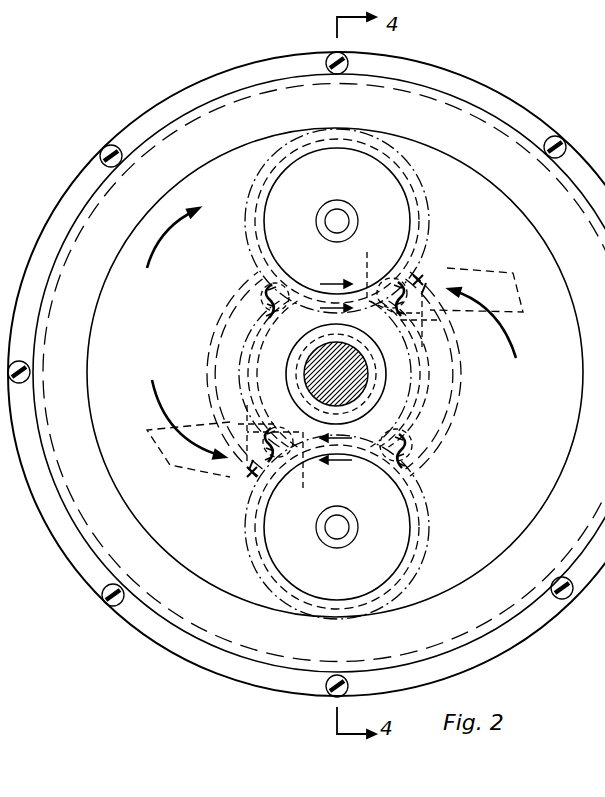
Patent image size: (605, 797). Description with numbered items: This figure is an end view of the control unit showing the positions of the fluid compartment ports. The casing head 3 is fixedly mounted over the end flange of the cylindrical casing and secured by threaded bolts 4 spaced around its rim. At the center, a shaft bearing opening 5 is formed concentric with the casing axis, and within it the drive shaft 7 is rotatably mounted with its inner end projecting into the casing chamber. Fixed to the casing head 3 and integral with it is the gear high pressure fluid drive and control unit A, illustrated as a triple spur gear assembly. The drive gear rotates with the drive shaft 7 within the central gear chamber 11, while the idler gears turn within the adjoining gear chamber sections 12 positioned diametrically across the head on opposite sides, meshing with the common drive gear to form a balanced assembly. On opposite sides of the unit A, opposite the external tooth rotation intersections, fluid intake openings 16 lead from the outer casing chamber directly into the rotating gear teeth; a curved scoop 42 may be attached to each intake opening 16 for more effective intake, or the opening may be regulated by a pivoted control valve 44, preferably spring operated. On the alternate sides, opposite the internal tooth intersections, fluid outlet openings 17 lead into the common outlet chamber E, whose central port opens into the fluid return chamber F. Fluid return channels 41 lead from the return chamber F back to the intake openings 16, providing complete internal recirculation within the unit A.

The casing head 3 is at (63, 540).
The threaded bolts 4 is at (104, 600).
The shaft bearing opening 5 is at (305, 369).
The drive shaft 7 is at (308, 383).
The central gear chamber 11 is at (420, 368).
The gear chamber sections 12 is at (420, 184).
The fluid intake openings 16 is at (427, 298).
The fluid outlet openings 17 is at (252, 296).
The fluid return channels 41 is at (421, 279).
The curved scoop 42 is at (500, 278).
The pivoted control valve 44 is at (427, 283).
The gear high pressure fluid drive and control unit A is at (432, 204).
The fluid outlet discharge chamber E is at (448, 410).
The fluid return chamber F is at (438, 430).